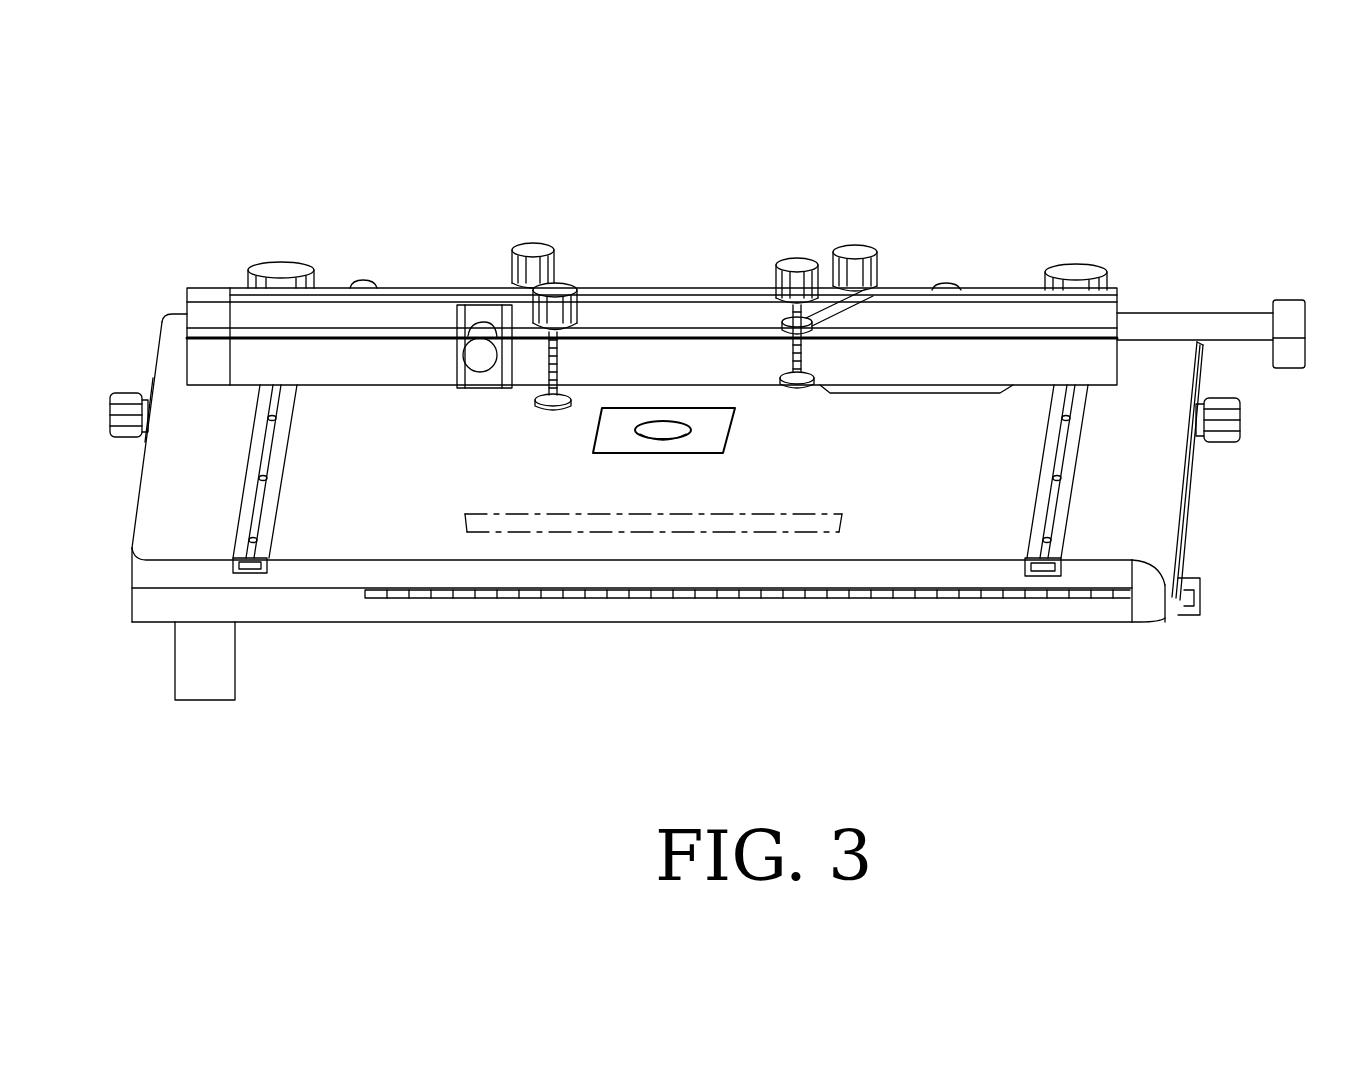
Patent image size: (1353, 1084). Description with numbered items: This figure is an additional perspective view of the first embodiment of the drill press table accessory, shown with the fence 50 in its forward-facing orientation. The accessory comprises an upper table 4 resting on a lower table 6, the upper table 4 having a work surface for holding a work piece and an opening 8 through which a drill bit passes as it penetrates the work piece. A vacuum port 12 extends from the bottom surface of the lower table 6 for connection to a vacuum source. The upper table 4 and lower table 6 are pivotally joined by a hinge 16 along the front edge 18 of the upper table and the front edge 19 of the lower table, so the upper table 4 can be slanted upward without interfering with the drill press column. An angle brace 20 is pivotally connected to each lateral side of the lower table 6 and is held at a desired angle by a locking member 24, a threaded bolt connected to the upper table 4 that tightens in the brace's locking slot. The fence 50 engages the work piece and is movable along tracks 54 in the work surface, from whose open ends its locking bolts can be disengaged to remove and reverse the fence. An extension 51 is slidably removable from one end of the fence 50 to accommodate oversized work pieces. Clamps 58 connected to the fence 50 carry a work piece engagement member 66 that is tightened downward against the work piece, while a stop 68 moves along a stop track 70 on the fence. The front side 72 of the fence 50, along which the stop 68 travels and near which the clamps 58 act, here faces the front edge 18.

The upper table 4 is at (135, 500).
The lower table 6 is at (130, 598).
The opening 8 is at (673, 420).
The vacuum port 12 is at (175, 660).
The hinge 16 is at (636, 600).
The front edge 18 is at (352, 577).
The front edge 19 is at (800, 625).
The angle brace 20 is at (1200, 522).
The locking member 24 is at (122, 400).
The fence 50 is at (997, 290).
The extension 51 is at (1290, 305).
The tracks 54 is at (257, 574).
The clamps 58 is at (557, 265).
The work piece engagement member 66 is at (793, 260).
The stop 68 is at (483, 345).
The stop track 70 is at (903, 333).
The front side 72 is at (397, 312).